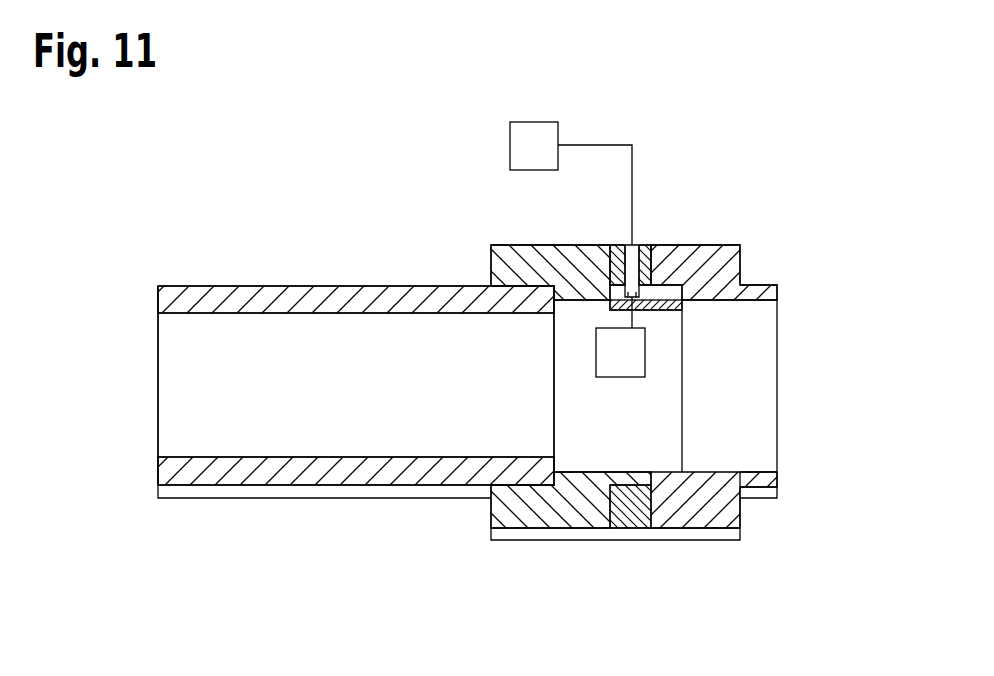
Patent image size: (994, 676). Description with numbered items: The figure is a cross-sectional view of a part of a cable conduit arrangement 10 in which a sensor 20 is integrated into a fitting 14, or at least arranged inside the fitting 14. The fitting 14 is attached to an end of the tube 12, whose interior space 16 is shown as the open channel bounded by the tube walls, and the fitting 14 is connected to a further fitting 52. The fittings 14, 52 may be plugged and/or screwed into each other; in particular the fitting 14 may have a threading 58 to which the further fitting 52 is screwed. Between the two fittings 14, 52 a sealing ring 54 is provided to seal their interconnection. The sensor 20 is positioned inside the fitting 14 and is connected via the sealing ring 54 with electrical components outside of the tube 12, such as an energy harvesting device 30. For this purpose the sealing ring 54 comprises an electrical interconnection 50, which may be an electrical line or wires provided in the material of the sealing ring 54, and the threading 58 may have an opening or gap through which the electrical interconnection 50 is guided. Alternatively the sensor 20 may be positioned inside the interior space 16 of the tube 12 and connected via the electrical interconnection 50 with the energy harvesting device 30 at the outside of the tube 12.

The sensor arrangement 10 is at (846, 108).
The tube 12 is at (284, 296).
The fitting 14 is at (505, 262).
The interior space 16 is at (175, 392).
The sensor 20 is at (645, 350).
The energy harvesting device 30 is at (510, 141).
The electrical interconnection 50 is at (630, 245).
The further fitting 52 is at (703, 245).
The sealing ring 54 is at (645, 245).
The threading 58 is at (682, 303).